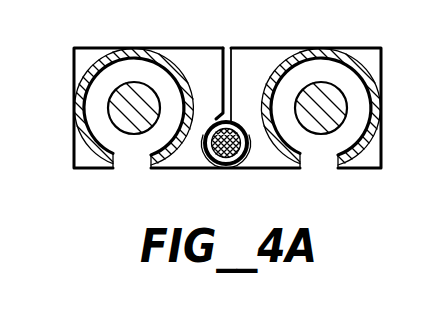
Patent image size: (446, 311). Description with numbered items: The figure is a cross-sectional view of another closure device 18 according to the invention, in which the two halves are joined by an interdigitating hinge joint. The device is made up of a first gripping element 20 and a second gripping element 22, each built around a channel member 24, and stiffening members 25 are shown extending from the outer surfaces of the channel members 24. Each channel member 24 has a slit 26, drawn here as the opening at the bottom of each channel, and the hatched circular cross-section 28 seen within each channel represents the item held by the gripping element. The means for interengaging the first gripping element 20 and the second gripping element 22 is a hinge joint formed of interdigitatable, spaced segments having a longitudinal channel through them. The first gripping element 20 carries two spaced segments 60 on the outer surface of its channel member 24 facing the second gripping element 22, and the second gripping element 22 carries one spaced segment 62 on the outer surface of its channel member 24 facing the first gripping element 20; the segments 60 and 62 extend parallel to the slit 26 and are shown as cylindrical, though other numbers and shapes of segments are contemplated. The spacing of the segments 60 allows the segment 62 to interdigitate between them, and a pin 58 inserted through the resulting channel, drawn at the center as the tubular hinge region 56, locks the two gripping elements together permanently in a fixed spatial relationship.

The closure device 18 is at (252, 180).
The first gripping element 20 is at (72, 89).
The second gripping element 22 is at (384, 89).
The channel member 24 is at (88, 140).
The stiffening member 25 is at (90, 55).
The slit 26 is at (131, 162).
The cable 28 is at (135, 92).
The tube 56 is at (217, 174).
The pin 58 is at (231, 108).
The spaced segments 60 is at (209, 118).
The spaced segment 62 is at (243, 117).